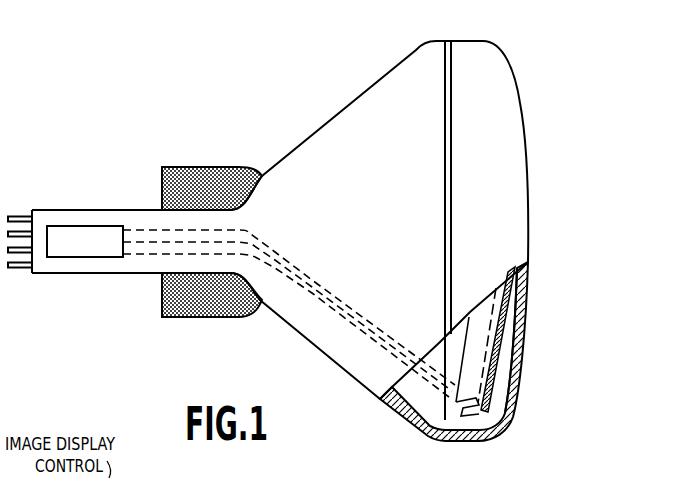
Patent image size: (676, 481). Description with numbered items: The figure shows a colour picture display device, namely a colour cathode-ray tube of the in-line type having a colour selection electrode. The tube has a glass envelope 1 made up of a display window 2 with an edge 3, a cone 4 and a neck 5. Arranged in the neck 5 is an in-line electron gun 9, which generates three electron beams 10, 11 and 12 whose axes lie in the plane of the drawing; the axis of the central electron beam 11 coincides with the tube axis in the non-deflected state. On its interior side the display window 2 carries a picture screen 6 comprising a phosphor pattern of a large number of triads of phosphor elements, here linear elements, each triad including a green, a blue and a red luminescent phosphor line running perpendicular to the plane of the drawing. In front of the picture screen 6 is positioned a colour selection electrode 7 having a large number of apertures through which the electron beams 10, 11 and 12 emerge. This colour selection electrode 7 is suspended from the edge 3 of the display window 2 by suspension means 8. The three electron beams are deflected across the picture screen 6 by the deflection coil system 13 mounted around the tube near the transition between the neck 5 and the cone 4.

The glass envelope 1 is at (489, 128).
The display window 2 is at (508, 382).
The edge 3 is at (497, 428).
The cone 4 is at (345, 125).
The neck 5 is at (138, 226).
The picture screen 6 is at (510, 297).
The colour selection electrode 7 is at (489, 340).
The suspension means 8 is at (469, 424).
The in-line electron gun 9 is at (91, 253).
The electron beam 10 is at (249, 232).
The central electron beam 11 is at (287, 254).
The electron beam 12 is at (317, 289).
The deflection coil system 13 is at (221, 188).